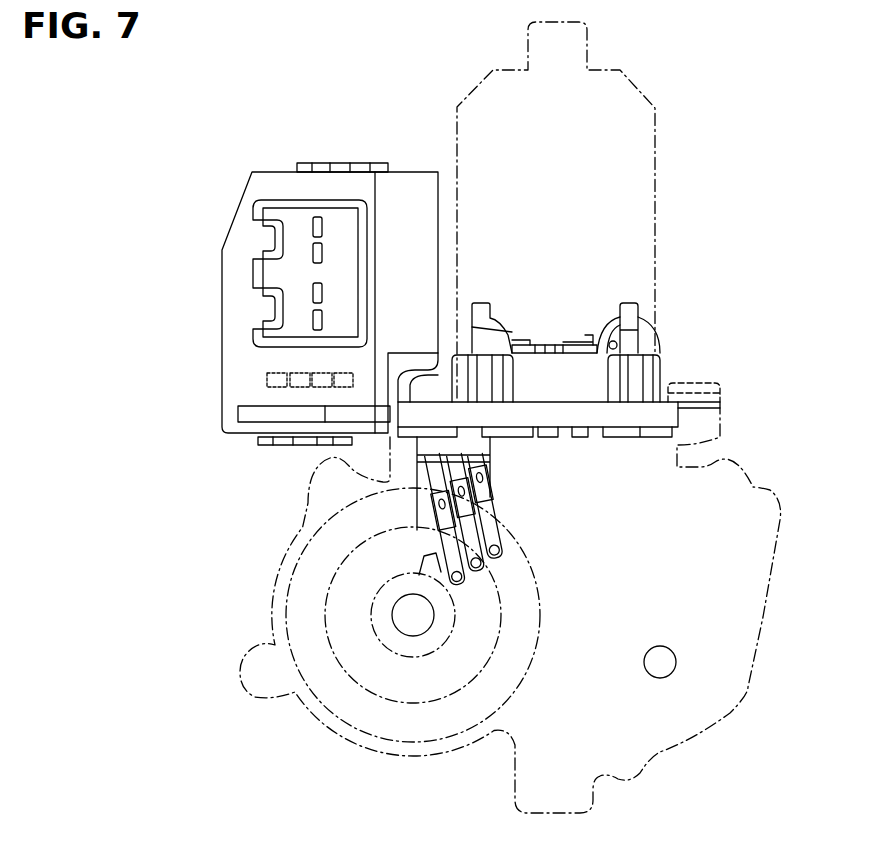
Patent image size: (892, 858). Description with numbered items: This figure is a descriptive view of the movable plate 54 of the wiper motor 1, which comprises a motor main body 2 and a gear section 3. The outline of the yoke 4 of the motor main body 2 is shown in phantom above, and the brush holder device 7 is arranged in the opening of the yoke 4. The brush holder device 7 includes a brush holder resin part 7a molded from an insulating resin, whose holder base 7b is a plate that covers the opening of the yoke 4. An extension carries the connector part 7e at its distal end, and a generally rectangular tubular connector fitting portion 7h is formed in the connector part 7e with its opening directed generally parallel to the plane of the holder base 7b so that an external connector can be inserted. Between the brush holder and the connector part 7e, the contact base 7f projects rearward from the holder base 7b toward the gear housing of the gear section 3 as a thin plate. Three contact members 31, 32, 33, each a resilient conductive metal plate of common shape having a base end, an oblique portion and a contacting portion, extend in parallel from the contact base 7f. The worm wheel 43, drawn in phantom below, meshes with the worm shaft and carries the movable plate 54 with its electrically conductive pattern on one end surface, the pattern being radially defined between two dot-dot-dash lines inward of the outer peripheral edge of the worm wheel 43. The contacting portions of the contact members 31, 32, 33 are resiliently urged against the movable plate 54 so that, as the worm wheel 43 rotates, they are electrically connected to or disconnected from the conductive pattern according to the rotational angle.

The wiper motor 1 is at (770, 298).
The motor main body 2 is at (713, 318).
The gear section 3 is at (775, 410).
The yoke 4 is at (655, 173).
The brush holder device 7 is at (654, 350).
The brush holder resin part 7a is at (660, 372).
The holder base 7b is at (465, 345).
The connector part 7e is at (232, 358).
The contact base 7f is at (490, 452).
The connector fitting portion 7h is at (282, 200).
The contact member 31 is at (483, 493).
The contact member 32 is at (480, 537).
The contact member 33 is at (500, 543).
The worm wheel 43 is at (545, 628).
The movable plate 54 is at (538, 608).